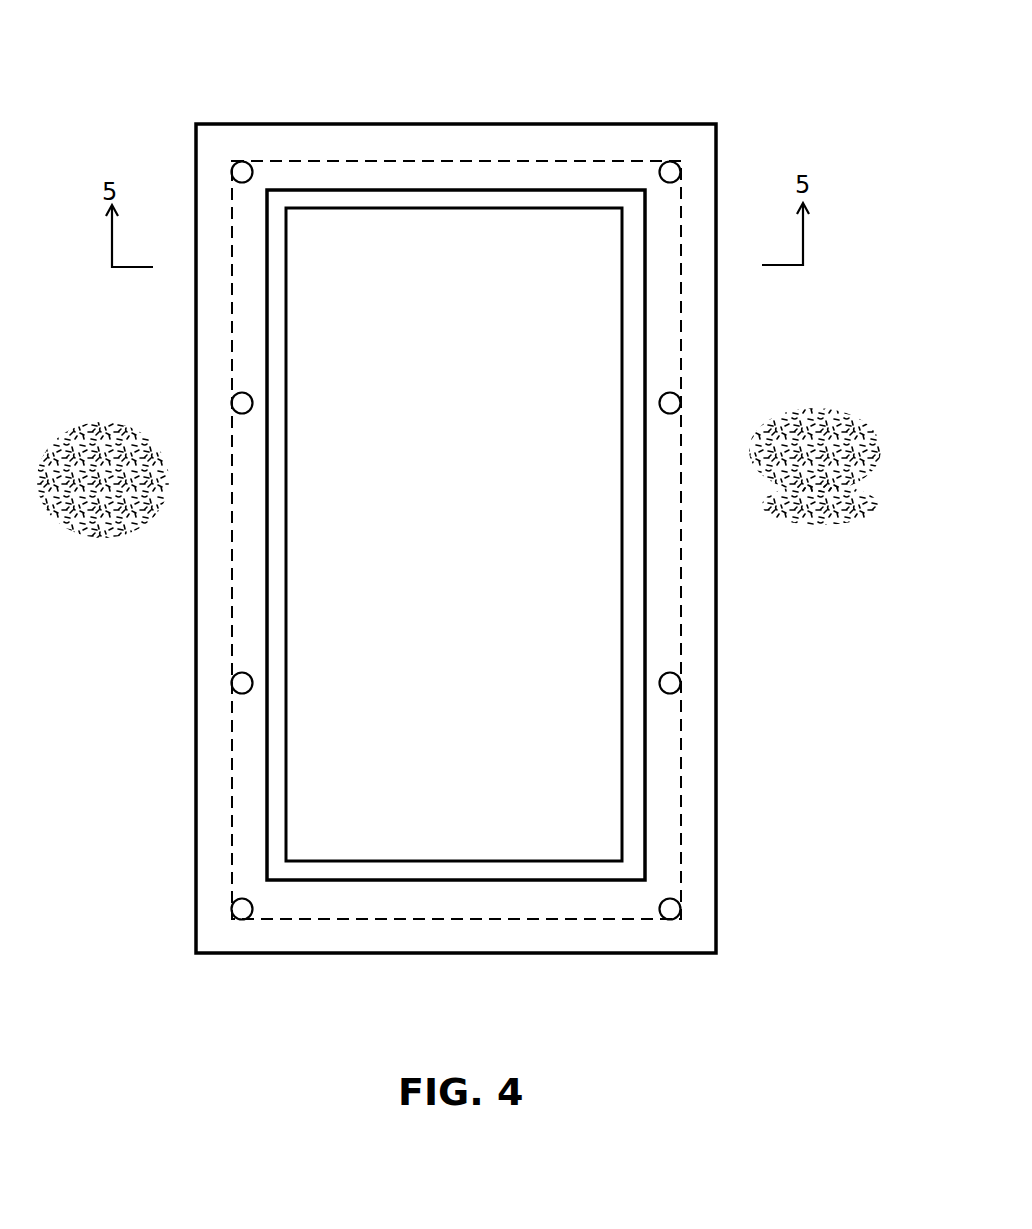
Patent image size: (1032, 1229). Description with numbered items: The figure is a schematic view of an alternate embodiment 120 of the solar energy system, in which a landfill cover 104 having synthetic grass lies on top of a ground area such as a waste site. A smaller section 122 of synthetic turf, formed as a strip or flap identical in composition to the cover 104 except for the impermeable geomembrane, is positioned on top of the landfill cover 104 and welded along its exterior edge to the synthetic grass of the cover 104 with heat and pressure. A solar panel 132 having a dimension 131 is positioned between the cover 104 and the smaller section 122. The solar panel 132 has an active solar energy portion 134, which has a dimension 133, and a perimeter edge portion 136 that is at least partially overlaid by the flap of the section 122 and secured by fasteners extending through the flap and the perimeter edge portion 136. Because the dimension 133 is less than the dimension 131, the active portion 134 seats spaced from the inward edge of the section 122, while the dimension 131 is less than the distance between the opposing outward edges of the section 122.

The landfill cover 104 is at (785, 467).
The alternate embodiment of the solar energy system 120 is at (140, 608).
The smaller section of synthetic turf 122 is at (676, 682).
The dimension of the solar panel 131 is at (680, 340).
The solar panel 132 is at (535, 198).
The dimension of the active portion 133 is at (621, 756).
The active solar energy portion 134 is at (320, 810).
The perimeter edge portion 136 is at (273, 773).